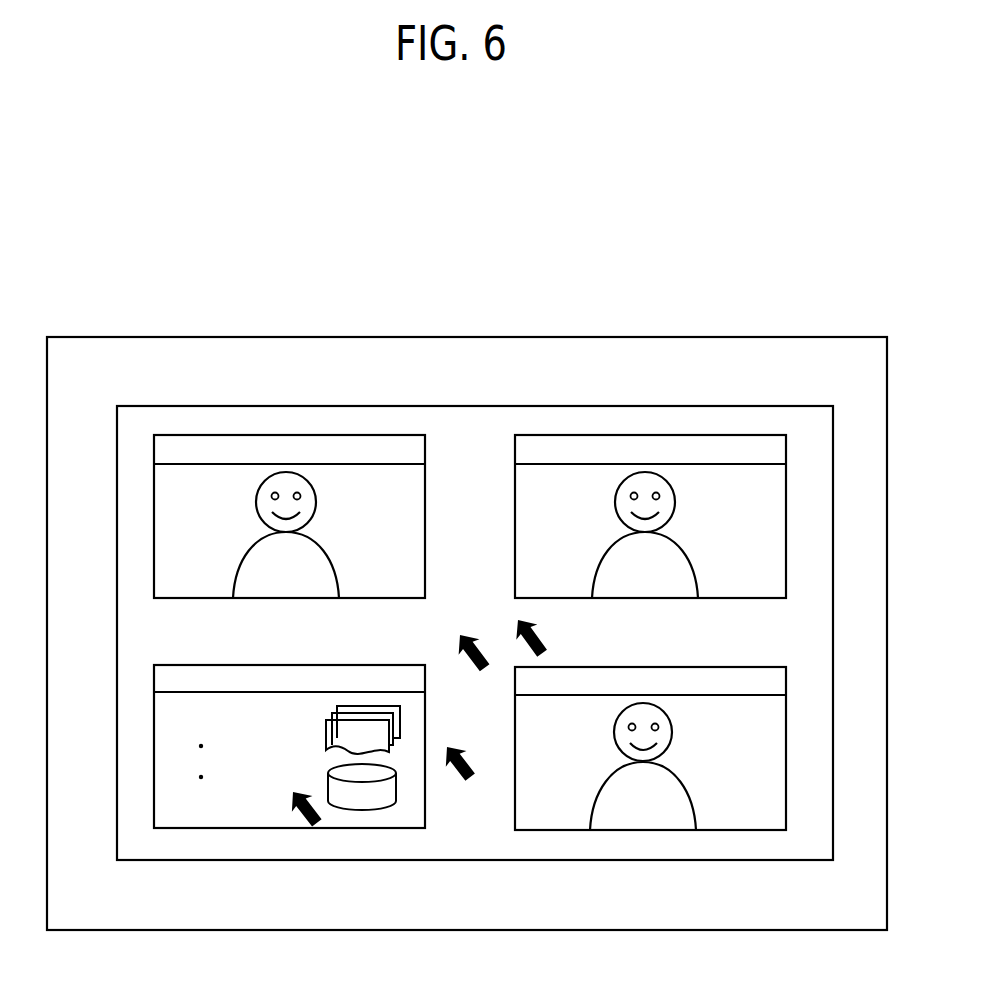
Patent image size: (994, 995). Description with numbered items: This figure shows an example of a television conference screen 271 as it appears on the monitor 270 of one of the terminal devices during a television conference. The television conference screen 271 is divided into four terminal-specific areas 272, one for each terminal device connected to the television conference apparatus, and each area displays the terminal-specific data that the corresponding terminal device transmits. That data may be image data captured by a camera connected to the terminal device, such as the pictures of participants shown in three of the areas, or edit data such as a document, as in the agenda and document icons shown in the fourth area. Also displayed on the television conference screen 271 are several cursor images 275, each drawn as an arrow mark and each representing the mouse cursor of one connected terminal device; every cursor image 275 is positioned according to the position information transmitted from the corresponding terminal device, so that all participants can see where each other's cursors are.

The monitor 270 is at (470, 272).
The television conference screen 271 is at (602, 406).
The terminal-specific area 272 is at (272, 435).
The cursor image 275 is at (477, 633).